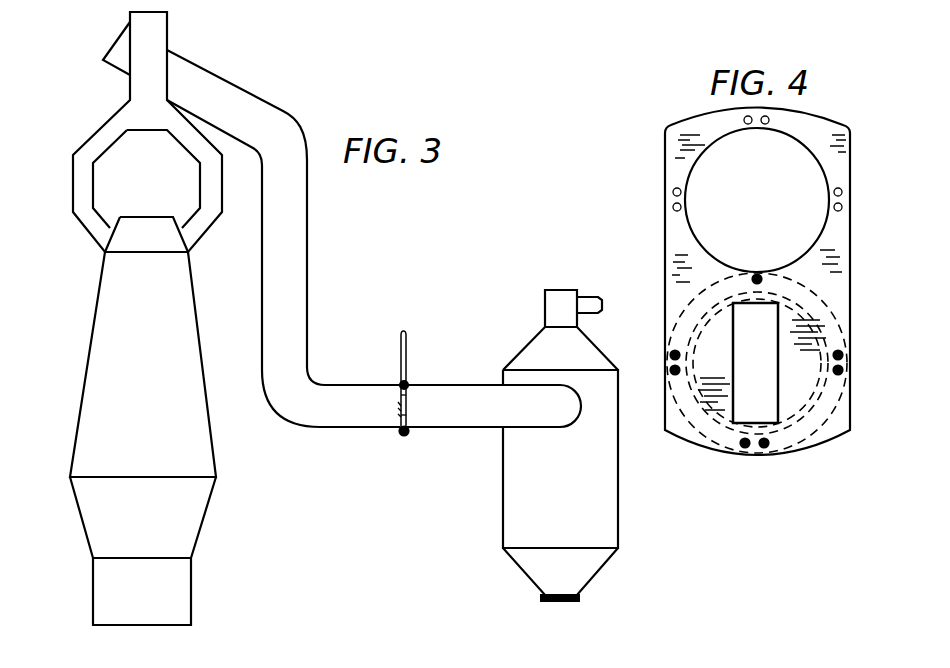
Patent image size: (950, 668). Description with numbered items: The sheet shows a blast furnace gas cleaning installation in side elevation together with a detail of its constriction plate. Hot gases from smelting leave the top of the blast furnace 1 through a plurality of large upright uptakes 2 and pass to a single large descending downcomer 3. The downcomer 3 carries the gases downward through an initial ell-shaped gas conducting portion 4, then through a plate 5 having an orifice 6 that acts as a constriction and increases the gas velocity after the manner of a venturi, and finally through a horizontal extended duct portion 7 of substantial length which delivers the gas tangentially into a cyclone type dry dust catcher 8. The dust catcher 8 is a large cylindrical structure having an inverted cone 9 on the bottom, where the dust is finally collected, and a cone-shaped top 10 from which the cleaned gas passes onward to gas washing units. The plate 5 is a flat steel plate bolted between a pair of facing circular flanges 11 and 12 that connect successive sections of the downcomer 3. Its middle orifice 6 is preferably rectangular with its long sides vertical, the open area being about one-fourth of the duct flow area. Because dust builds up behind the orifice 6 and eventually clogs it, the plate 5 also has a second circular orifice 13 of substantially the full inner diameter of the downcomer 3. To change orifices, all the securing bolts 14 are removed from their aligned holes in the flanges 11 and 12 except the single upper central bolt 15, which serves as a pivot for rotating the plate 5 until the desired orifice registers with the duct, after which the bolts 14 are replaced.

In FIG. 3, the blast furnace 1 is at (143, 421).
In FIG. 3, the uptakes 2 is at (73, 192).
In FIG. 3, the downcomer 3 is at (268, 105).
In FIG. 3, the ell-shaped gas conducting portion 4 is at (308, 263).
In FIG. 3, the plate 5 is at (400, 350).
In FIG. 4, the plate 5 is at (850, 243).
In FIG. 4, the orifice 6 is at (755, 363).
In FIG. 3, the horizontal extended duct portion 7 is at (494, 406).
In FIG. 4, the horizontal extended duct portion 7 is at (812, 302).
In FIG. 3, the cyclone dust catcher 8 is at (560, 459).
In FIG. 3, the inverted cone 9 is at (560, 575).
In FIG. 3, the cone-shaped top 10 is at (560, 330).
In FIG. 3, the circular flange 11 is at (399, 395).
In FIG. 3, the circular flange 12 is at (412, 417).
In FIG. 4, the second circular orifice 13 is at (757, 200).
In FIG. 3, the securing bolts 14 is at (408, 407).
In FIG. 4, the securing bolts 14 is at (671, 370).
In FIG. 3, the upper central bolt 15 is at (412, 387).
In FIG. 4, the upper central bolt 15 is at (764, 256).